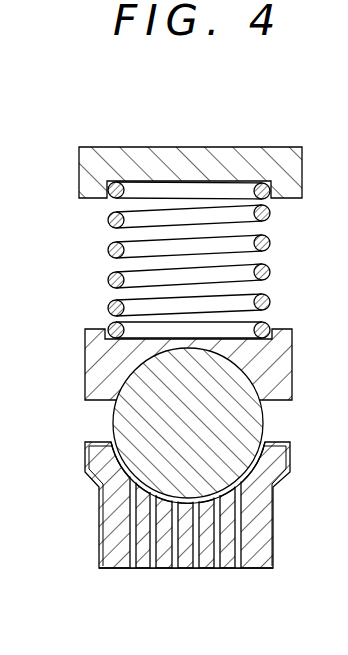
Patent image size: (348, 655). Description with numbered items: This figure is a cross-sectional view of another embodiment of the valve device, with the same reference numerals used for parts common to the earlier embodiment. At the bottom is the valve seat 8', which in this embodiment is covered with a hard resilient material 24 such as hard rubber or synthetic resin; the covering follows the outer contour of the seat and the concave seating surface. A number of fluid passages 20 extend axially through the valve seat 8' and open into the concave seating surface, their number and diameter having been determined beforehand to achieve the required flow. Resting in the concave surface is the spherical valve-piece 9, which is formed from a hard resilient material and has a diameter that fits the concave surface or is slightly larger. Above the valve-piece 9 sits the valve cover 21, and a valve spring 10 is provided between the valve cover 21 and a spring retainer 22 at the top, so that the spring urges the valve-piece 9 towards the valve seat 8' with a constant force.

The spring retainer 22 is at (80, 175).
The valve spring 10 is at (108, 250).
The valve cover 21 is at (87, 367).
The valve-piece 9 is at (262, 420).
The valve seat 8' is at (181, 536).
The hard resilient material 24 is at (100, 513).
The fluid passages 20 is at (133, 570).